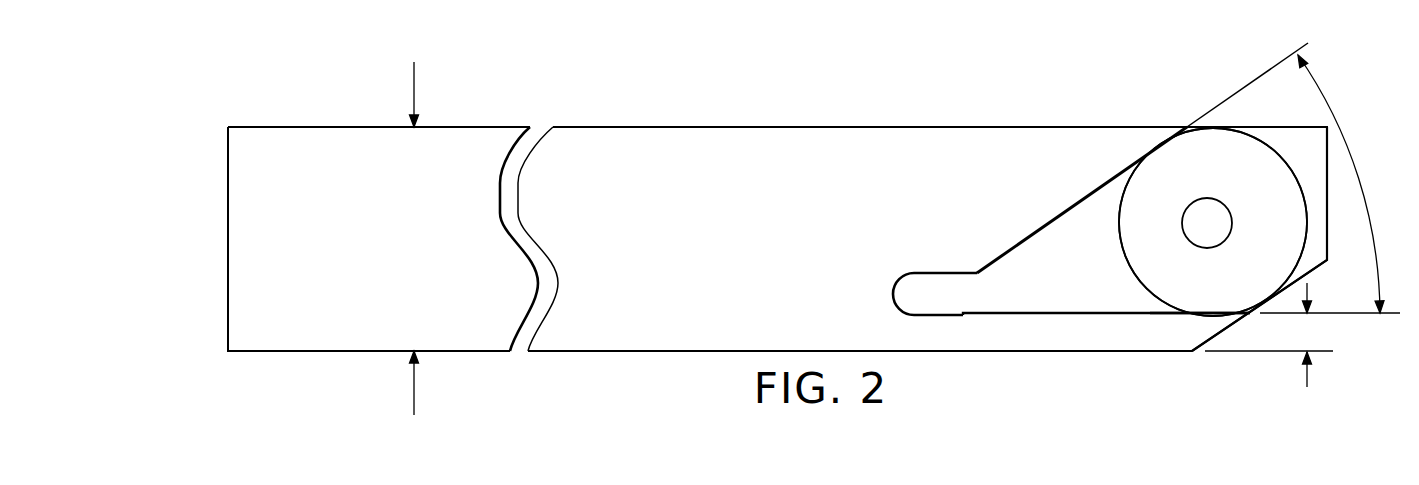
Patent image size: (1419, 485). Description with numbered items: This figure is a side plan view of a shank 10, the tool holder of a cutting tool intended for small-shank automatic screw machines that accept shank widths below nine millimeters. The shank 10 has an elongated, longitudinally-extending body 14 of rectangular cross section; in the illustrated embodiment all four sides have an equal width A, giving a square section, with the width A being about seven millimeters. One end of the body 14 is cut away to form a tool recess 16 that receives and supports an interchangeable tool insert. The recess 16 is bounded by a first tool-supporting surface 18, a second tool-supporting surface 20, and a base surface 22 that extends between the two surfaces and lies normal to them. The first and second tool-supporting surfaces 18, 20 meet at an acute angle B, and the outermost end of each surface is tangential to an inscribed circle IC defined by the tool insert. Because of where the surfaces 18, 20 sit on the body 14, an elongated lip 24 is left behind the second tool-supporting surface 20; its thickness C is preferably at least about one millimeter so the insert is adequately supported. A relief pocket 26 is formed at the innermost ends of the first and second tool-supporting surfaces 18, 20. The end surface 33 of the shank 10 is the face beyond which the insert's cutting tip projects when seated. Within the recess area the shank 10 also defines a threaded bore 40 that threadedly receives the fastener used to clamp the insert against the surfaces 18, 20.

The shank 10 is at (858, 120).
The body 14 is at (657, 295).
The tool recess 16 is at (1265, 127).
The first tool-supporting surface 18 is at (1042, 232).
The second tool-supporting surface 20 is at (1078, 313).
The base surface 22 is at (1213, 278).
The lip 24 is at (1058, 327).
The relief pocket 26 is at (930, 278).
The end surface 33 is at (1327, 228).
The threaded bore 40 is at (1188, 214).
The inscribed circle IC is at (1127, 265).
The width A is at (414, 378).
The acute angle B is at (1358, 172).
The thickness C is at (1310, 375).